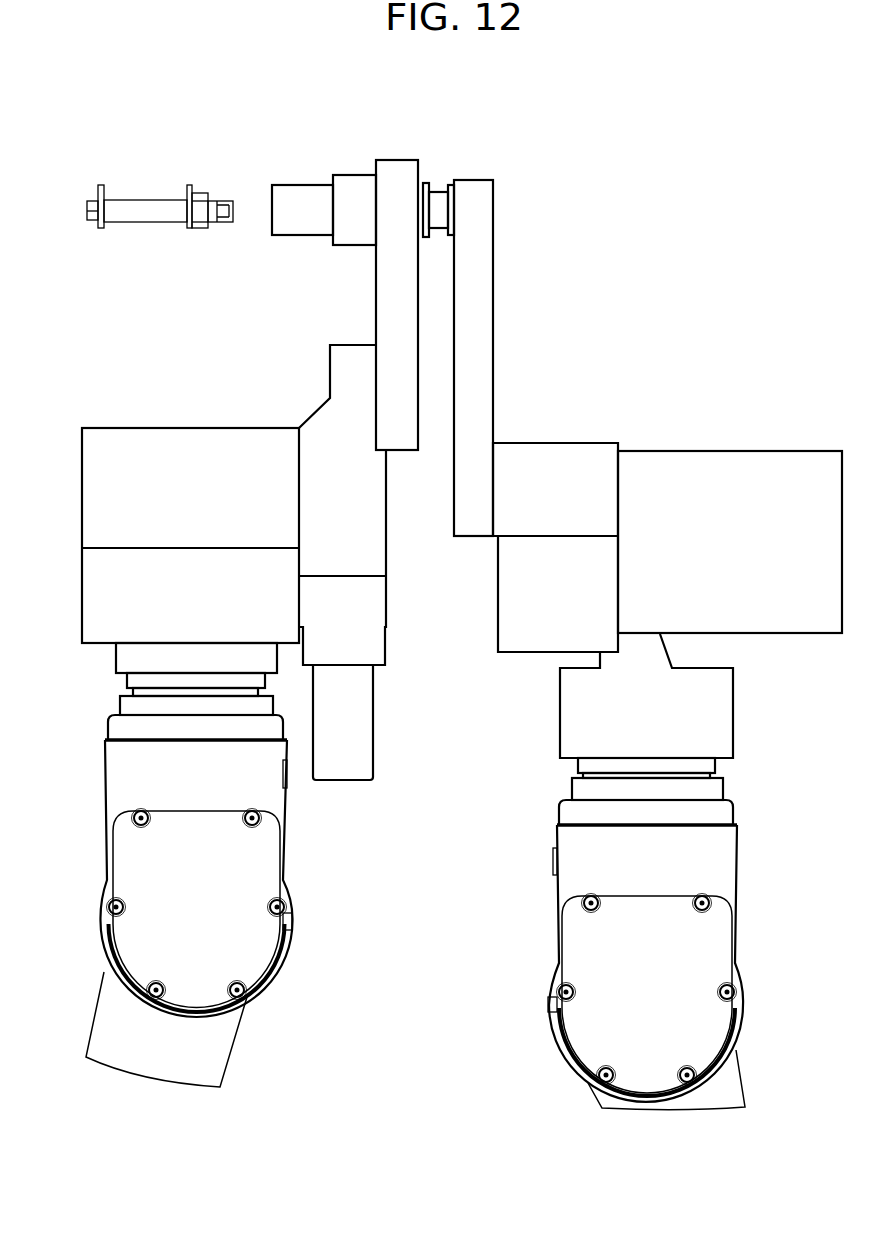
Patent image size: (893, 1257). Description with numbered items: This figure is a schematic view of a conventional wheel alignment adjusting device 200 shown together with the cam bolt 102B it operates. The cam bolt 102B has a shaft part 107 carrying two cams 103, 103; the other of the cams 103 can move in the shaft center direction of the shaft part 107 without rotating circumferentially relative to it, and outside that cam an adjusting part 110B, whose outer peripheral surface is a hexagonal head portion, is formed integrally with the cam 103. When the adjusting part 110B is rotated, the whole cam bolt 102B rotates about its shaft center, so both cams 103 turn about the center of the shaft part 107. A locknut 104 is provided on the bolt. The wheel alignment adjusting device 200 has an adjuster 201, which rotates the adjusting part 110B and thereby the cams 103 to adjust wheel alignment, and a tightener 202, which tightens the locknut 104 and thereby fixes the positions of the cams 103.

The cam bolt 102B is at (156, 182).
The cam 103 is at (99, 187).
The locknut 104 is at (220, 207).
The shaft part 107 is at (134, 212).
The adjusting part 110B is at (201, 228).
The wheel alignment adjusting device 200 is at (508, 164).
The adjuster 201 is at (306, 172).
The tightener 202 is at (508, 210).